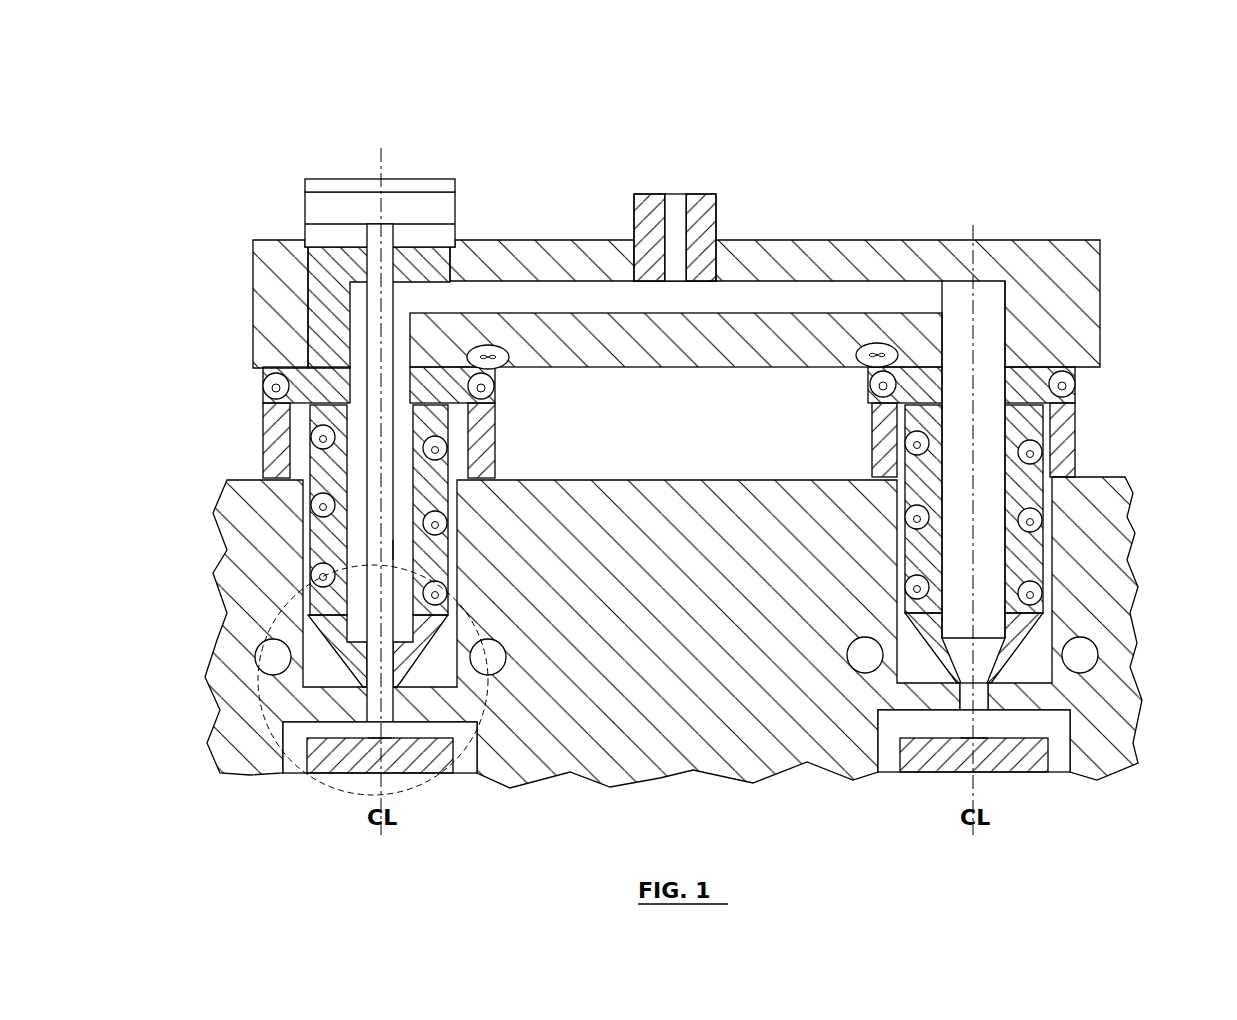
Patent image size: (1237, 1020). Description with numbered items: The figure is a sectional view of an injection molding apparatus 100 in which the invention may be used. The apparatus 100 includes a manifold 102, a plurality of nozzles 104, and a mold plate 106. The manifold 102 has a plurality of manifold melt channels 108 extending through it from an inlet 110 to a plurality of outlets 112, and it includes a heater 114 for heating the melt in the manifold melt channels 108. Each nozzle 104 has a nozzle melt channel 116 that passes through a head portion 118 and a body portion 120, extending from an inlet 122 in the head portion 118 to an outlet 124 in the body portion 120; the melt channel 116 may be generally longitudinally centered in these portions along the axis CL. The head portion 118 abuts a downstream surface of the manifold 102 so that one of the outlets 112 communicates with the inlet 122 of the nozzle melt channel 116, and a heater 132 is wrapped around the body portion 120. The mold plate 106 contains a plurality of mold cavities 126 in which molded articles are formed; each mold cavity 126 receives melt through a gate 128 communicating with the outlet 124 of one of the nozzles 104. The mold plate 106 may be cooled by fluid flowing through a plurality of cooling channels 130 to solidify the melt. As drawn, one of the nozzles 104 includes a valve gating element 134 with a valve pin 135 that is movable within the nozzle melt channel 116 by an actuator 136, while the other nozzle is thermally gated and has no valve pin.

The injection molding apparatus 100 is at (1055, 172).
The manifold 102 is at (1063, 238).
The nozzle 104 is at (458, 481).
The mold plate 106 is at (683, 599).
The manifold melt channel 108 is at (802, 297).
The inlet 110 is at (673, 195).
The outlet 112 is at (267, 380).
The heater 114 is at (505, 365).
The nozzle melt channel 116 is at (415, 503).
The head portion 118 is at (272, 427).
The body portion 120 is at (325, 465).
The inlet 122 is at (365, 372).
The outlet 124 is at (357, 735).
The mold cavity 126 is at (475, 760).
The gate 128 is at (397, 738).
The cooling channel 130 is at (492, 657).
The heater 132 is at (318, 578).
The valve gating element 134 is at (298, 206).
The valve pin 135 is at (394, 548).
The actuator 136 is at (457, 208).